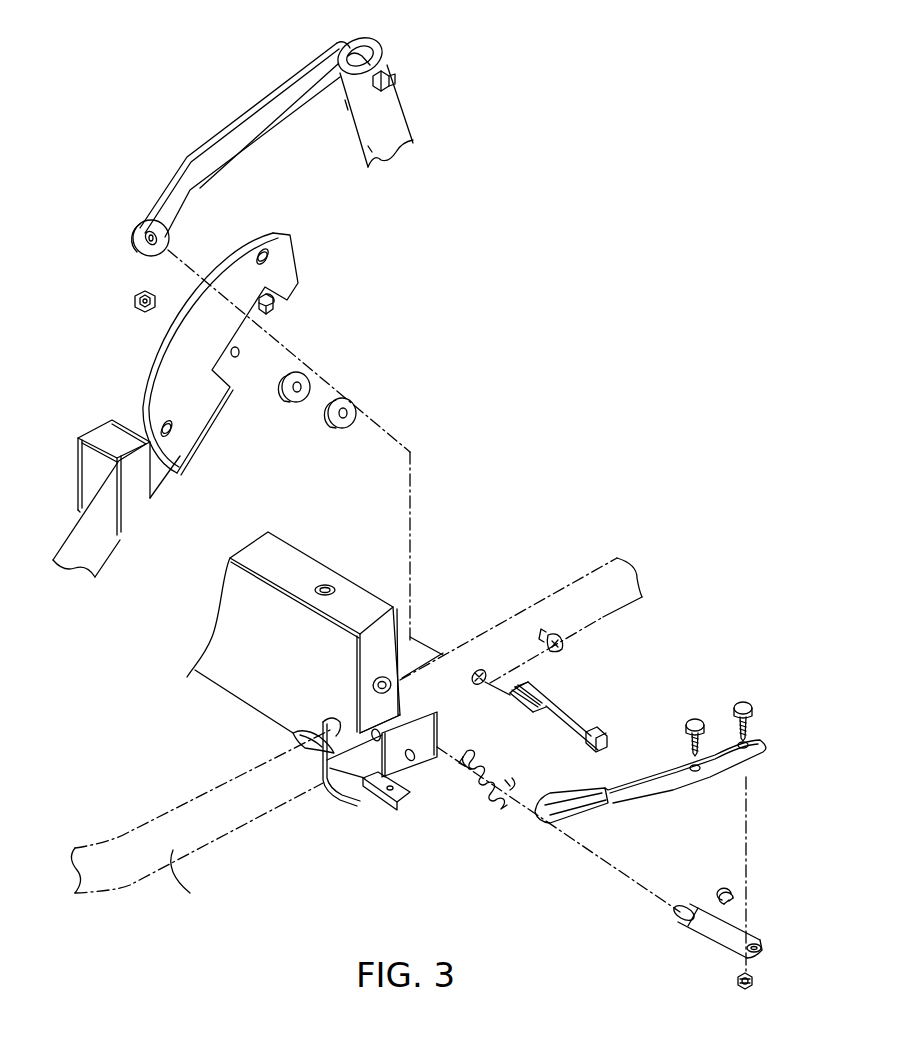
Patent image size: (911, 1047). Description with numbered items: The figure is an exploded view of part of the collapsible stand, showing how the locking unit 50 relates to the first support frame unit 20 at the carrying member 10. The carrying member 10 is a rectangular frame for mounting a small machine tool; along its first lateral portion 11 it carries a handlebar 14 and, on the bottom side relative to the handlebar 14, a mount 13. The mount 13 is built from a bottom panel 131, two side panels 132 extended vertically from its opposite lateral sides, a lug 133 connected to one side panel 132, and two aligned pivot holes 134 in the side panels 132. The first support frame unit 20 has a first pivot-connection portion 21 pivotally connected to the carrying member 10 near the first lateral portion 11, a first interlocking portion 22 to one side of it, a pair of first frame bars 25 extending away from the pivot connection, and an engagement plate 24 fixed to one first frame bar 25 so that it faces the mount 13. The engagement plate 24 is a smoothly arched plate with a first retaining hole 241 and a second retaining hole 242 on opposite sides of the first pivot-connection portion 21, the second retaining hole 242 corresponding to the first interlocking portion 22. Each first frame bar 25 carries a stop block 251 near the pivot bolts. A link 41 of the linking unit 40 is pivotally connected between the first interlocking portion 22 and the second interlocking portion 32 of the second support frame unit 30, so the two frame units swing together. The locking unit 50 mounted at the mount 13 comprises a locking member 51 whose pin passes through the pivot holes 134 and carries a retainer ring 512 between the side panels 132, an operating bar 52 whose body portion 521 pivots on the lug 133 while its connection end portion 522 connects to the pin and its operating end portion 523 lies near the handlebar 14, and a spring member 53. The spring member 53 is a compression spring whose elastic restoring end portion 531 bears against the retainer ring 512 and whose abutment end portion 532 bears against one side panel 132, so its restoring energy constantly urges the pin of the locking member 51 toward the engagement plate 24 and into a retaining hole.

The carrying member 10 is at (195, 680).
The first lateral portion 11 is at (260, 683).
The mount 13 is at (414, 782).
The bottom panel 131 is at (348, 790).
The side panel 132 is at (418, 760).
The lug 133 is at (390, 810).
The pivot hole 134 is at (422, 762).
The handlebar 14 is at (190, 895).
The first support frame unit 20 is at (66, 542).
The first pivot-connection portion 21 is at (242, 354).
The first interlocking portion 22 is at (276, 313).
The engagement plate 24 is at (178, 341).
The first retaining hole 241 is at (163, 420).
The second retaining hole 242 is at (265, 247).
The first frame bar 25 is at (90, 565).
The stop block 251 is at (112, 439).
The second support frame unit 30 is at (412, 130).
The second interlocking portion 32 is at (425, 50).
The linking unit 40 is at (223, 128).
The link 41 is at (283, 95).
The locking unit 50 is at (760, 730).
The locking member 51 is at (705, 934).
The retainer ring 512 is at (726, 892).
The operating bar 52 is at (665, 795).
The body portion 521 is at (691, 766).
The connection end portion 522 is at (740, 744).
The operating end portion 523 is at (582, 803).
The spring member 53 is at (484, 766).
The elastic restoring end portion 531 is at (467, 757).
The abutment end portion 532 is at (505, 782).